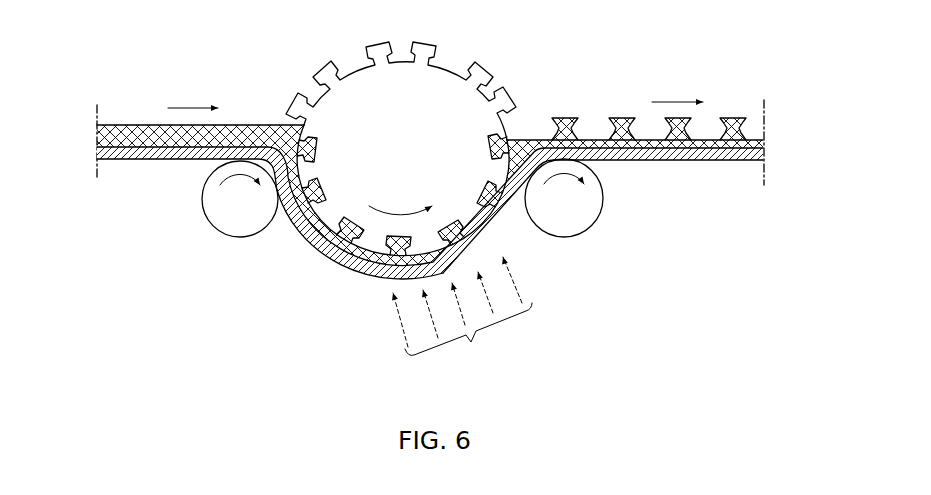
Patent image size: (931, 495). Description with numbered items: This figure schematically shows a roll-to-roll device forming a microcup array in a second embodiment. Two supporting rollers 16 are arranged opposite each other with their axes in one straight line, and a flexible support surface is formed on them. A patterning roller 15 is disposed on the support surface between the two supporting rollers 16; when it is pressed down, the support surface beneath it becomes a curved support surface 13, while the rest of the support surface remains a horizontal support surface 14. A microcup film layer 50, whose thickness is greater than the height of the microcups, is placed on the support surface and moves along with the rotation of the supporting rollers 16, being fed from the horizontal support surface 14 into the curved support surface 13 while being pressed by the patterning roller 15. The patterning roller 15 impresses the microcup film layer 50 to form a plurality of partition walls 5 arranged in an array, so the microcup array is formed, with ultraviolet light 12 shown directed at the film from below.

The partition wall 5 is at (562, 118).
The ultraviolet light 12 is at (462, 319).
The curved support surface 13 is at (335, 268).
The horizontal support surface 14 is at (175, 160).
The patterning roller 15 is at (480, 70).
The supporting roller 16 is at (592, 227).
The microcup film layer 50 is at (131, 125).